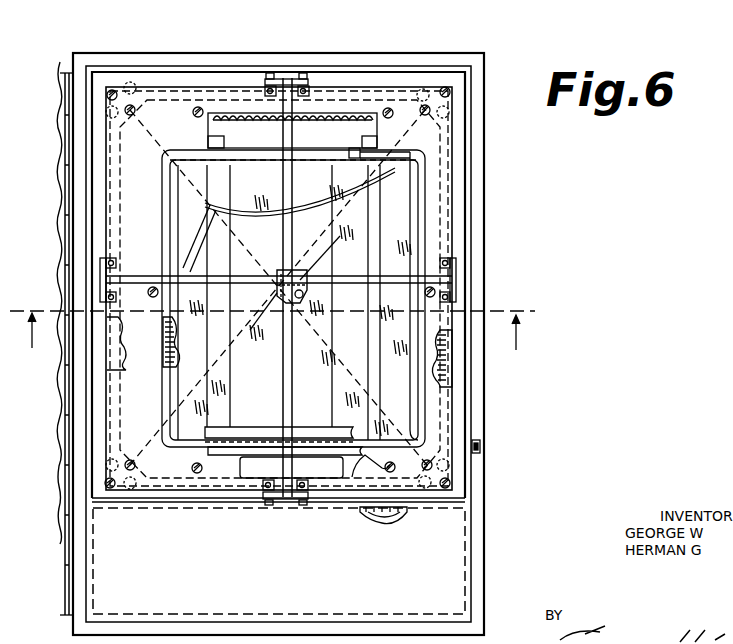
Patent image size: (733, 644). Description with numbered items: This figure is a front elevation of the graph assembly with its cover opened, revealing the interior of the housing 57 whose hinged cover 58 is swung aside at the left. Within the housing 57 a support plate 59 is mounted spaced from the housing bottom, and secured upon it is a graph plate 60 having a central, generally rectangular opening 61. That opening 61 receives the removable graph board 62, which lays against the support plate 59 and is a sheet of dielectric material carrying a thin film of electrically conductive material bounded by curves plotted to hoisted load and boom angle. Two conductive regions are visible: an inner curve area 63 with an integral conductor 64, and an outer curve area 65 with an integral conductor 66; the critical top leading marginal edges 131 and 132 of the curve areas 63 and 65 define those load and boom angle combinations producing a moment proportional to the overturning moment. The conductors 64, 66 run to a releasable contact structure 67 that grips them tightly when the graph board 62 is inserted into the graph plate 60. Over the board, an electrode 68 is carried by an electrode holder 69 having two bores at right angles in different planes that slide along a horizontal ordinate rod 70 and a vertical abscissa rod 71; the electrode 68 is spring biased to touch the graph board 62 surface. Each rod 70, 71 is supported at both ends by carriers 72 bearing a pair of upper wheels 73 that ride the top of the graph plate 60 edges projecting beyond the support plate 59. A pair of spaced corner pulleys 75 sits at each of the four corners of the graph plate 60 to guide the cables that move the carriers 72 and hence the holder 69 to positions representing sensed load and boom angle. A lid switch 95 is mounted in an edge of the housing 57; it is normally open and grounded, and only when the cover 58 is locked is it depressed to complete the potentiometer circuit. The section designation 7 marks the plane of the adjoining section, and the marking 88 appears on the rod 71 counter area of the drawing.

The section line 7- 7 is at (272, 343).
The housing 57 is at (484, 157).
The hinged cover 58 is at (54, 72).
The support plate 59 is at (446, 375).
The graph plate 60 is at (440, 413).
The central, generally rectangular opening 61 is at (163, 352).
The removable graph board 62 is at (258, 363).
The inner curve area 63 is at (316, 223).
The conductor 64 is at (396, 160).
The outer curve area 65 is at (265, 193).
The conductor 66 is at (350, 153).
The releasable contact structure 67 is at (228, 135).
The electrode 68 is at (308, 292).
The electrode holder 69 is at (306, 277).
The horizontal ordinate rod 70 is at (396, 284).
The vertical abscissa rod 71 is at (280, 134).
The carriers 72 is at (100, 272).
The upper wheels 73 is at (268, 86).
The corner pulleys 75 is at (130, 85).
The counter wheel 88 is at (352, 118).
The lid switch 95 is at (481, 446).
The top leading marginal edge 131 is at (328, 215).
The top leading marginal edge 132 is at (226, 207).